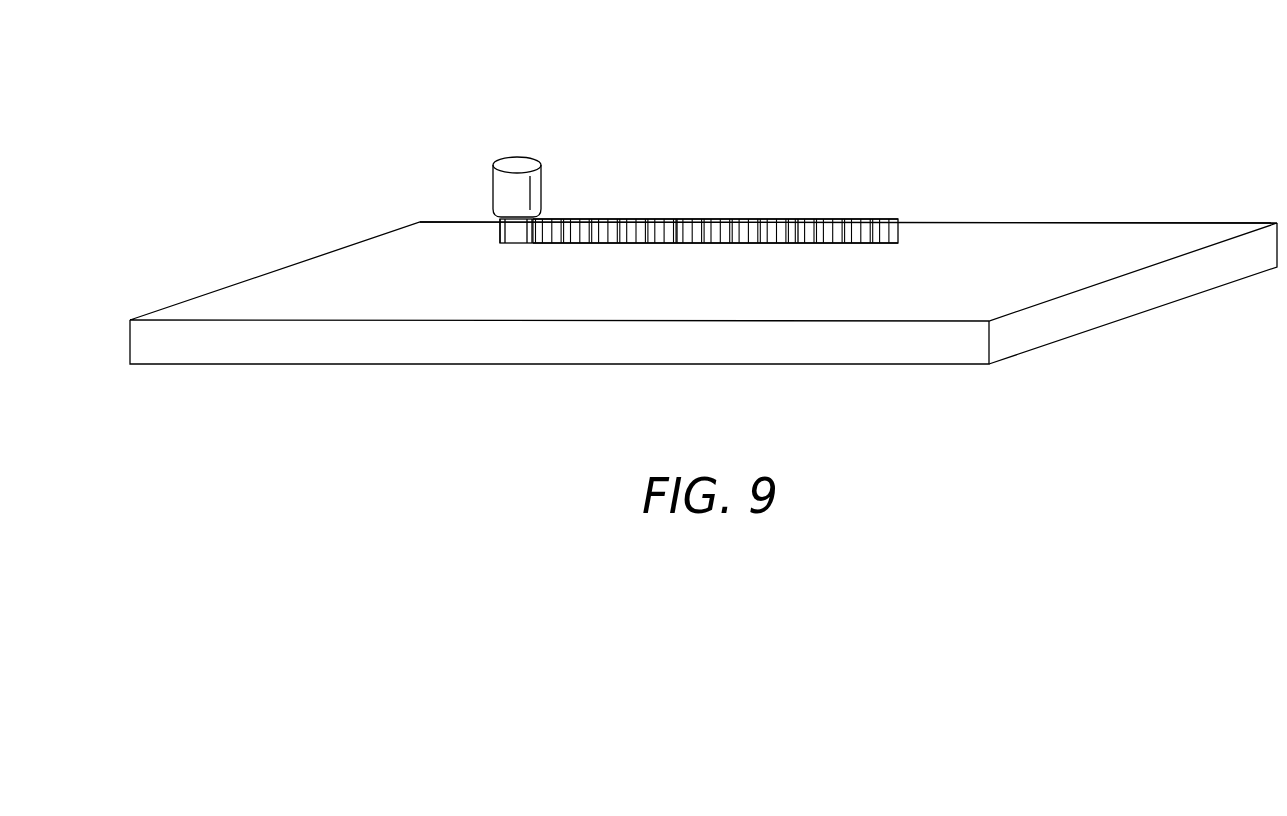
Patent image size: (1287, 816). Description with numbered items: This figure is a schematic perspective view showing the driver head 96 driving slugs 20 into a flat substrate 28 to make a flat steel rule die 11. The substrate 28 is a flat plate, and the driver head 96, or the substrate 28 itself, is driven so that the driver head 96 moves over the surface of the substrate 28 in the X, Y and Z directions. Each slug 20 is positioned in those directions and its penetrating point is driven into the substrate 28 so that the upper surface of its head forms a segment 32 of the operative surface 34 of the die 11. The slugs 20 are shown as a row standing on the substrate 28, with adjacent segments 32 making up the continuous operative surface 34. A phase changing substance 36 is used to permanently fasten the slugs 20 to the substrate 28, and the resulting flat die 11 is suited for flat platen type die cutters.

The steel rule die 11 is at (946, 60).
The slug 20 is at (895, 208).
The flat substrate 28 is at (540, 342).
The segment 32 is at (687, 218).
The operative surface 34 is at (632, 207).
The phase changing substance 36 is at (1131, 235).
The driver head 96 is at (546, 157).